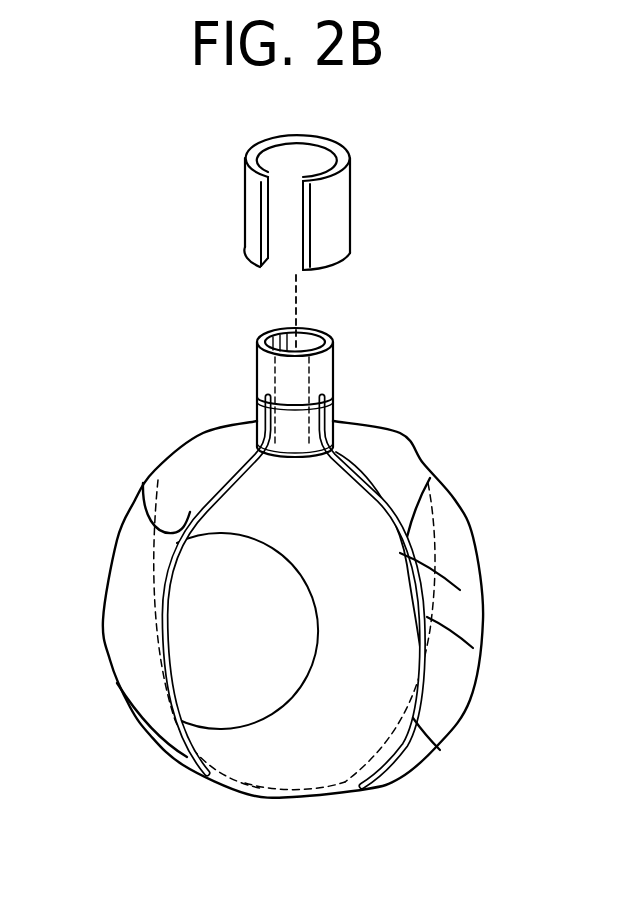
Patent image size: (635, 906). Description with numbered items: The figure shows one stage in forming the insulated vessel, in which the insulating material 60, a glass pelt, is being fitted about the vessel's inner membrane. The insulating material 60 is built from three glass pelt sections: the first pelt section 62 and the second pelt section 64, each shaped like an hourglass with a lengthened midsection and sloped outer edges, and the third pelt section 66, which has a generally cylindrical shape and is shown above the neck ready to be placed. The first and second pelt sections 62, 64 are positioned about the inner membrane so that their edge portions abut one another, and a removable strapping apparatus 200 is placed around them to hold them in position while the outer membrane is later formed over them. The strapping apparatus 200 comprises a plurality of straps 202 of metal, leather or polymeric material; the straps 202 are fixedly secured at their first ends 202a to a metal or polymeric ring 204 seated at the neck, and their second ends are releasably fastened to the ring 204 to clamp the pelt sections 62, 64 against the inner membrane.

The insulating material 60 is at (347, 188).
The third pelt section 66 is at (332, 238).
The removable strapping apparatus 200 is at (405, 537).
The straps 202 is at (193, 513).
The first ends of the straps 202a is at (257, 397).
The ring 204 is at (293, 405).
The first pelt section 62 is at (452, 597).
The second pelt section 64 is at (447, 713).